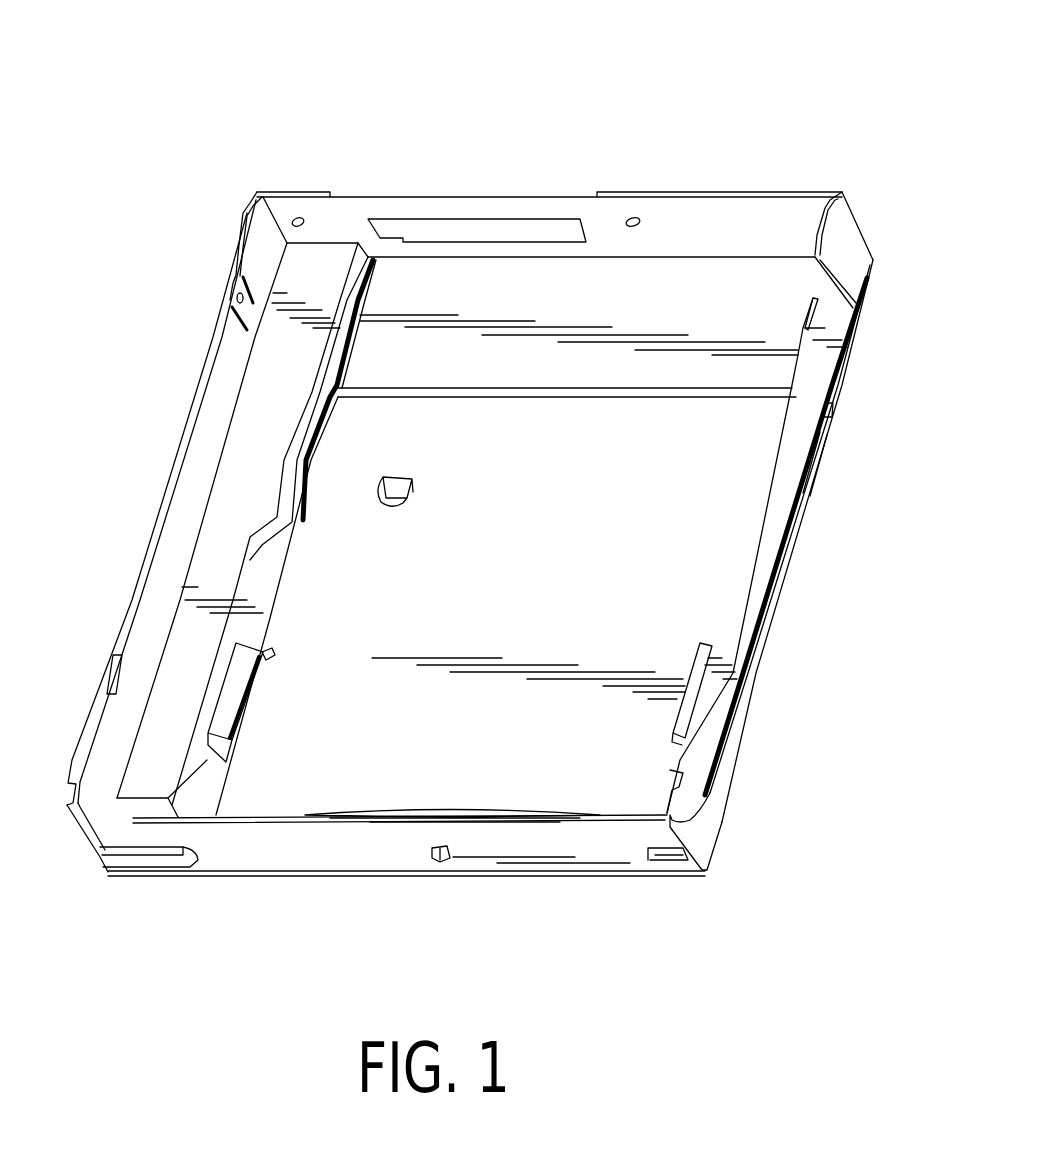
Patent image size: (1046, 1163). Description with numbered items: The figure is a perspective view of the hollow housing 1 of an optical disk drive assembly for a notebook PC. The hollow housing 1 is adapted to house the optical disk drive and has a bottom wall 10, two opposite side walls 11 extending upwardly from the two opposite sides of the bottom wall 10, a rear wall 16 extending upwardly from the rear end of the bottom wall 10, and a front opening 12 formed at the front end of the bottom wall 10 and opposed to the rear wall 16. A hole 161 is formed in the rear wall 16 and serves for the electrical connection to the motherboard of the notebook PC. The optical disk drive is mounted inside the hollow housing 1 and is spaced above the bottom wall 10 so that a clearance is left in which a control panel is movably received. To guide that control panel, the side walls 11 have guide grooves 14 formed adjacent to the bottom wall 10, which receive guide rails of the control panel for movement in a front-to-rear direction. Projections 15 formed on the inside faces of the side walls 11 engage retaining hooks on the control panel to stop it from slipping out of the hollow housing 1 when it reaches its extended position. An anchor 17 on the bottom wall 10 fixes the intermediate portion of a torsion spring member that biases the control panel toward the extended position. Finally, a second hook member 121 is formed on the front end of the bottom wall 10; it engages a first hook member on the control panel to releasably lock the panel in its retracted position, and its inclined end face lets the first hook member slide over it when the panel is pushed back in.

The hollow housing 1 is at (486, 491).
The bottom wall 10 is at (690, 563).
The side walls 11 is at (167, 510).
The front opening 12 is at (542, 855).
The second hook member 121 is at (438, 862).
The guide grooves 14 is at (232, 700).
The projections 15 is at (268, 657).
The rear wall 16 is at (635, 195).
The hole 161 is at (455, 197).
The anchor 17 is at (403, 478).